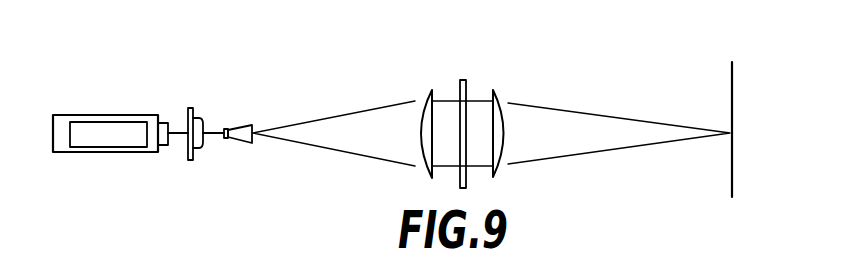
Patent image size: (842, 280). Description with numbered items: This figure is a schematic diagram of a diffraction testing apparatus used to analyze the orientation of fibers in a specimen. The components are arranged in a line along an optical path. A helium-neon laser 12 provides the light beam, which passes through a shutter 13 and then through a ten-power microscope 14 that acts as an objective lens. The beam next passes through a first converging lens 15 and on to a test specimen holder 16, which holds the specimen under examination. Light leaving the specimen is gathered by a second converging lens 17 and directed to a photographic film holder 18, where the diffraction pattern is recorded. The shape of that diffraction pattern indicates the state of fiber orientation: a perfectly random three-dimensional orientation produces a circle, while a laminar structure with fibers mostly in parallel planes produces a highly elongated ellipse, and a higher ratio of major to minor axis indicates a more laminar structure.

The helium-neon laser 12 is at (82, 117).
The shutter 13 is at (192, 108).
The ten-power microscope 14 is at (248, 125).
The first converging lens 15 is at (429, 90).
The test specimen holder 16 is at (469, 80).
The second converging lens 17 is at (497, 90).
The photographic film holder 18 is at (731, 90).